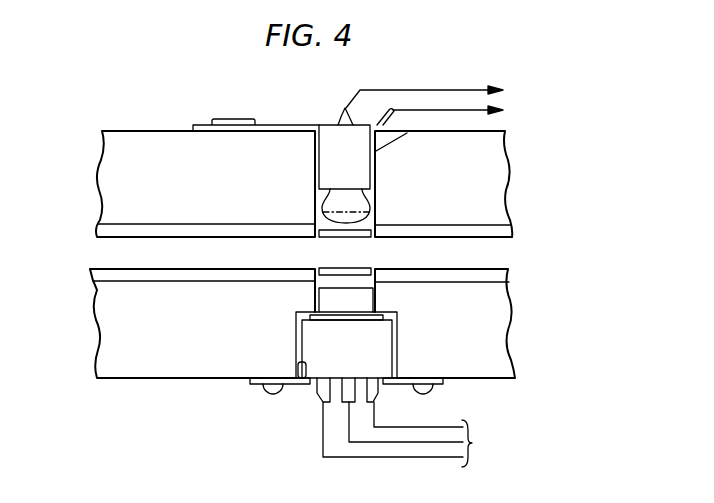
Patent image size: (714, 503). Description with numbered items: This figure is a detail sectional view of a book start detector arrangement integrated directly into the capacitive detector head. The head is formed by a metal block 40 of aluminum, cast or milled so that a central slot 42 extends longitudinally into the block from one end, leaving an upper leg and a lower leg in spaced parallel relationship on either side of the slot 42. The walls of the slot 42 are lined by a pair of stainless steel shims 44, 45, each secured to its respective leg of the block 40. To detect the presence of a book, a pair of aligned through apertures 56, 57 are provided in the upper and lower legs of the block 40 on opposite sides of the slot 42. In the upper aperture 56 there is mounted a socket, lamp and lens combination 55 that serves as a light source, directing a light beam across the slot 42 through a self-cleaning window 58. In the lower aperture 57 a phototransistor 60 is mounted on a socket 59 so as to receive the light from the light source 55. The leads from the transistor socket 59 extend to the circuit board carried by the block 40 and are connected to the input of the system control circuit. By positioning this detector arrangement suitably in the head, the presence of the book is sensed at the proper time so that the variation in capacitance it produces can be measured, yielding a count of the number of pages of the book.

The metal block 40 is at (477, 177).
The central slot 42 is at (124, 268).
The stainless steel shim 44 is at (513, 228).
The stainless steel shim 45 is at (510, 273).
The socket, lamp and lens combination 55 is at (352, 143).
The through aperture 56 is at (322, 140).
The through aperture 57 is at (304, 382).
The self-cleaning window 58 is at (342, 268).
The socket 59 is at (377, 347).
The phototransistor 60 is at (358, 298).